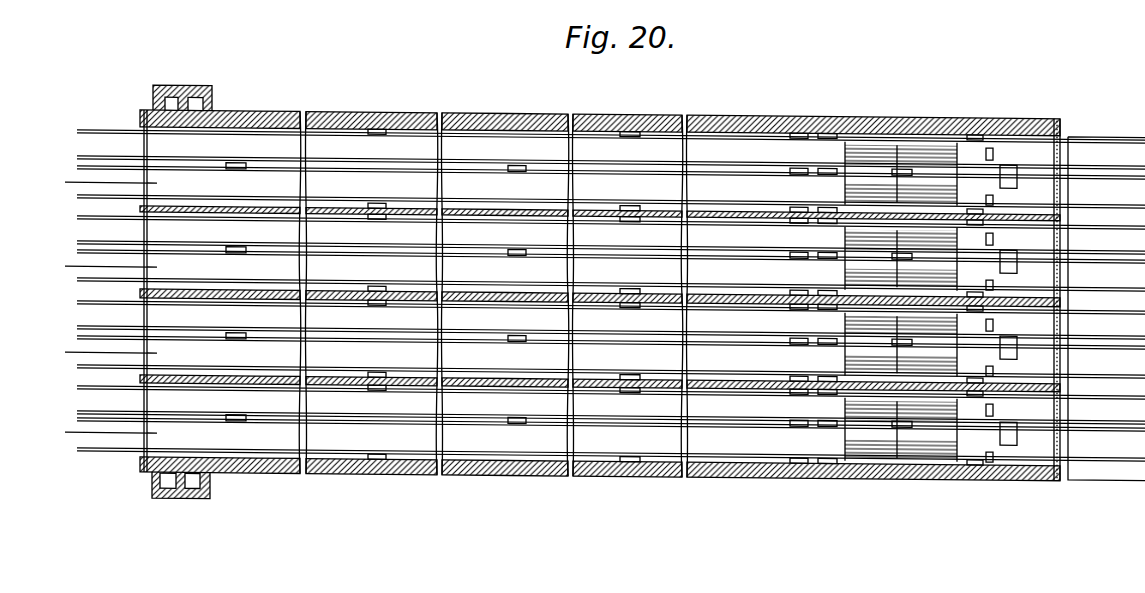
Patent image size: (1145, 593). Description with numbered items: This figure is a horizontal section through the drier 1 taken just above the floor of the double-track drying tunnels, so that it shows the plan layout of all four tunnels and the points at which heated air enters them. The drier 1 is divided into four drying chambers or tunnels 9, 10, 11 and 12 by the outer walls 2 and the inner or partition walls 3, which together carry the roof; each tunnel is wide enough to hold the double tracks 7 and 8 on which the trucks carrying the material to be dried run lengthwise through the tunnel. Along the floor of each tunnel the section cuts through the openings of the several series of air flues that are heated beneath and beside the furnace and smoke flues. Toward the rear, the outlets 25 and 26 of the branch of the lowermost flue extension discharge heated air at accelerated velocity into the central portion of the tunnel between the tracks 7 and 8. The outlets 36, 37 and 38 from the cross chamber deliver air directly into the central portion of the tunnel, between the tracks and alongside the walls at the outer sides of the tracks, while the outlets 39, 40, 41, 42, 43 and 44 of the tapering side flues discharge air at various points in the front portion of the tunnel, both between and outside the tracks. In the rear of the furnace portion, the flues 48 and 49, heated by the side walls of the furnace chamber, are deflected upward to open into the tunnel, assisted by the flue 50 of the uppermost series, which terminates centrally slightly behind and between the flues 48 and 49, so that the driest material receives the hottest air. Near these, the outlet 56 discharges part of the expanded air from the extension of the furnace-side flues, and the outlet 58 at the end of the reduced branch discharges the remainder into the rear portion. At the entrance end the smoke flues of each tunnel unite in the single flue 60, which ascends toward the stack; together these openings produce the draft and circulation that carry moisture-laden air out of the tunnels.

The drier 1 is at (700, 117).
The outer walls 2 is at (500, 117).
The inner or partition walls 3 is at (470, 288).
The track 7 is at (1082, 181).
The track 8 is at (1086, 146).
The drying chamber or tunnel 9 is at (98, 433).
The drying chamber or tunnel 10 is at (93, 352).
The drying chamber or tunnel 11 is at (93, 268).
The drying chamber or tunnel 12 is at (93, 183).
The outlet 25 is at (903, 161).
The outlet 26 is at (826, 160).
The outlet 36 is at (794, 163).
The outlet 37 is at (796, 200).
The outlet 38 is at (800, 126).
The outlet 39 is at (628, 200).
The outlet 40 is at (376, 200).
The outlet 41 is at (516, 169).
The outlet 42 is at (234, 169).
The outlet 43 is at (630, 126).
The outlet 44 is at (376, 126).
The flue 48 is at (995, 191).
The flue 49 is at (995, 141).
The flue 50 is at (1017, 160).
The outlet 56 is at (976, 126).
The outlet 58 is at (830, 126).
The flue 60 is at (195, 95).